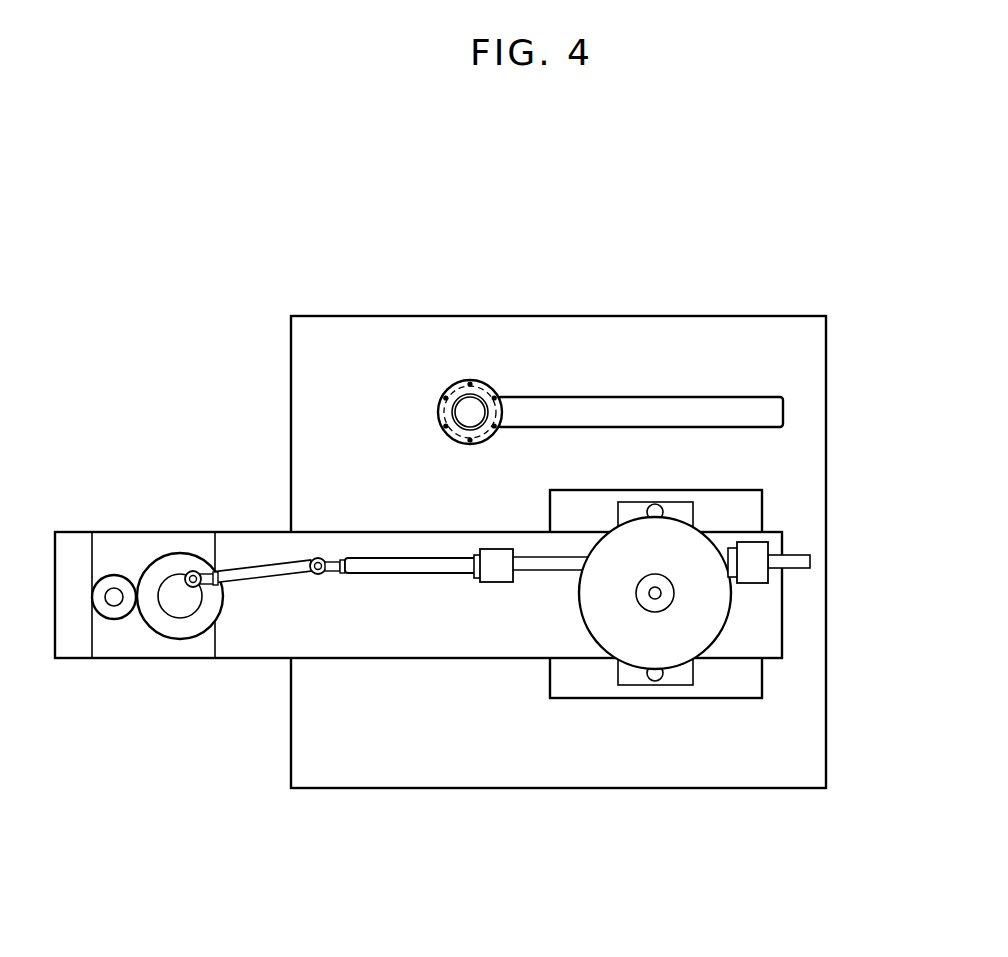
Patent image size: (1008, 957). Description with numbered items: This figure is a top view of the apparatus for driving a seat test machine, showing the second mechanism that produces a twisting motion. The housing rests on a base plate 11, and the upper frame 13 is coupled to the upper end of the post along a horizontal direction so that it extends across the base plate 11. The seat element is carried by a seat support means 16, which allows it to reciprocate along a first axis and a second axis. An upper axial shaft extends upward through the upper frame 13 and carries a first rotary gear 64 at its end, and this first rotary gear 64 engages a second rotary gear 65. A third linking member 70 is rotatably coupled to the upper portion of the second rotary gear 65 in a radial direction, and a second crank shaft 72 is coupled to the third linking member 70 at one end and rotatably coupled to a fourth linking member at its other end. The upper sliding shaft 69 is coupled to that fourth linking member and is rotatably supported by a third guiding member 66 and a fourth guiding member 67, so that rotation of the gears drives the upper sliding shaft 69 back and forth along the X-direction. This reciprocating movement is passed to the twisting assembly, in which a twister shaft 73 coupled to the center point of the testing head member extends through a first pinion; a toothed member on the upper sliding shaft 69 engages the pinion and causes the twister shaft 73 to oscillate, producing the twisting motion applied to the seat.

The base plate 11 is at (810, 750).
The upper frame 13 is at (255, 658).
The seat support means 16 is at (770, 507).
The first rotary gear 64 is at (114, 575).
The second rotary gear 65 is at (181, 639).
The third guiding member 66 is at (497, 582).
The fourth guiding member 67 is at (765, 566).
The upper sliding shaft 69 is at (384, 558).
The third linking member 70 is at (193, 571).
The second crank shaft 72 is at (265, 566).
The twister shaft 73 is at (668, 598).